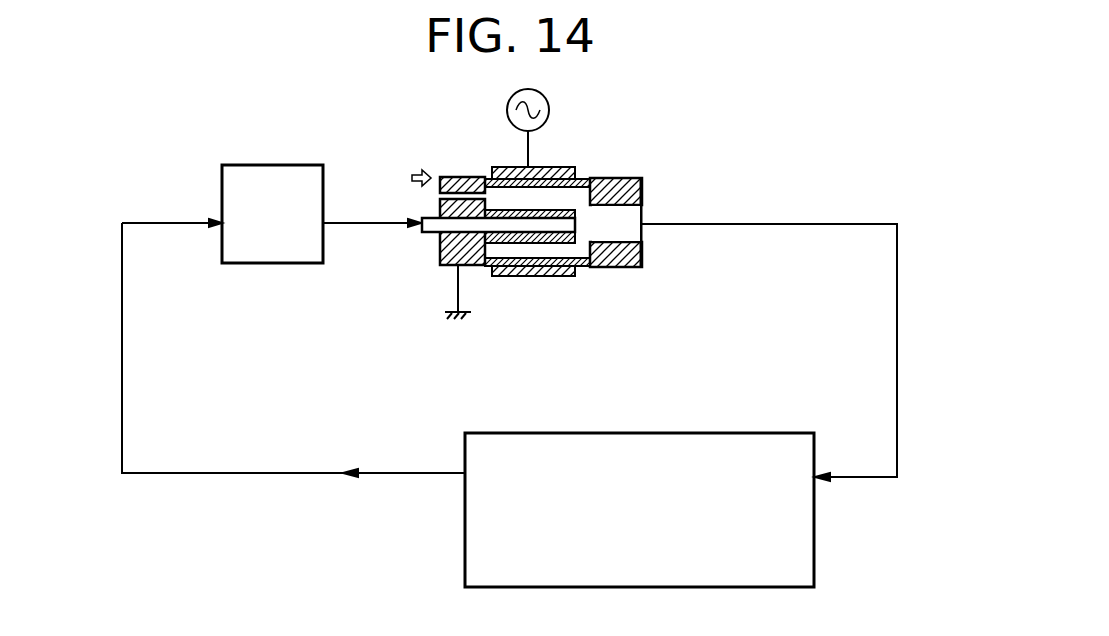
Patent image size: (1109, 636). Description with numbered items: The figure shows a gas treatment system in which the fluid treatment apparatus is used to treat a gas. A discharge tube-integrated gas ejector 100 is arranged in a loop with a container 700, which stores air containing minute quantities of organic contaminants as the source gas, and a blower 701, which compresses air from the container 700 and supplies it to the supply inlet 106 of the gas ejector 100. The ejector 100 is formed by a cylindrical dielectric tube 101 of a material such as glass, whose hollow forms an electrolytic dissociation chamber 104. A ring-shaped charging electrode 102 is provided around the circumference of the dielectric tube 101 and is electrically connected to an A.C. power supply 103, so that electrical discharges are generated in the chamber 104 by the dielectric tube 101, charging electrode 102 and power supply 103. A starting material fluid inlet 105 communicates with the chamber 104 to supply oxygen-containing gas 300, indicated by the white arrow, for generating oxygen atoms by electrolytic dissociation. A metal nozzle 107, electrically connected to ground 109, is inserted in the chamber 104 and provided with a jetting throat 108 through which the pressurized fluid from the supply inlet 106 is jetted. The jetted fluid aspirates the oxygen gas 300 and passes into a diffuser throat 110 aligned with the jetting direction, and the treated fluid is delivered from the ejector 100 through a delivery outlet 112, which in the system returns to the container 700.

The blower 701 is at (268, 173).
The container 700 is at (600, 578).
The oxygen gas 300 is at (412, 172).
The starting material fluid inlet 105 is at (436, 190).
The supply inlet 106 is at (421, 233).
The jetting throat 108 is at (578, 222).
The dielectric tube 101 is at (585, 179).
The charging electrode 102 is at (559, 167).
The nozzle 107 is at (558, 245).
The electrolytic dissociation chamber 104 is at (512, 250).
The discharge tube-integrated gas ejector 100 is at (630, 267).
The delivery outlet 112 is at (647, 218).
The diffuser throat 110 is at (627, 220).
The A.C. power supply 103 is at (544, 96).
The ground 109 is at (444, 310).